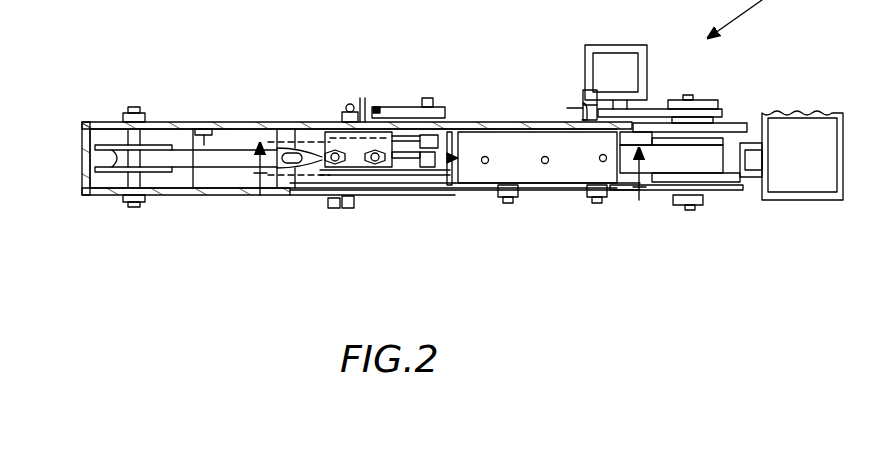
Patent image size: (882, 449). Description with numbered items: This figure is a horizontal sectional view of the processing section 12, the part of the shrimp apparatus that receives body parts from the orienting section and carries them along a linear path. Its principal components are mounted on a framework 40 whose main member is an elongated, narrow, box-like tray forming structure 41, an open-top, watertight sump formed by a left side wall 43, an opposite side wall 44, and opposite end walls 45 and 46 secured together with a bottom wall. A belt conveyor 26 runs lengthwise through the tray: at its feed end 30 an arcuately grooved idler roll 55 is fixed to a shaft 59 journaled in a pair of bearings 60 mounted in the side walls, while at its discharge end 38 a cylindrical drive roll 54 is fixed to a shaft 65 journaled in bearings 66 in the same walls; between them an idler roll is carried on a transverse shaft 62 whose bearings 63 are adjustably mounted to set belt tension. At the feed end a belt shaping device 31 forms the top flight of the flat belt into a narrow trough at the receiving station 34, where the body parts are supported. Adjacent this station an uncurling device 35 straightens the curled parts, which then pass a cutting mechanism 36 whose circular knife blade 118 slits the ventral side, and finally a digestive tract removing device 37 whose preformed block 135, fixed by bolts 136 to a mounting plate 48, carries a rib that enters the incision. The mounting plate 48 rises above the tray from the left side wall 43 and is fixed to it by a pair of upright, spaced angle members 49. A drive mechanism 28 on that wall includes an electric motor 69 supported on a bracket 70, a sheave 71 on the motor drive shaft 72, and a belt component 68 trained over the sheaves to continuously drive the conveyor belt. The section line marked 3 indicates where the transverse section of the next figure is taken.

The processing section 12 is at (469, 73).
The left side wall 43 is at (280, 122).
The tray forming structure 41 is at (190, 195).
The end wall 45 is at (83, 157).
The grooved idler roll 55 is at (83, 185).
The shaft 59 is at (128, 120).
The bearings 60 is at (128, 207).
The feed end 30 is at (118, 150).
The belt shaping device 31 is at (190, 132).
The belt conveyor 26 is at (224, 136).
The receiving station 34 is at (204, 172).
The section line 3 is at (447, 173).
The framework 40 is at (263, 196).
The right side wall 44 is at (300, 196).
The uncurling device 35 is at (362, 172).
The transverse shaft 62 is at (345, 117).
The bearings 63 is at (330, 122).
The angle members 49 is at (360, 105).
The cutting mechanism 36 is at (410, 170).
The preformed block 135 is at (477, 178).
The knife blade 118 is at (460, 152).
The digestive tract removing device 37 is at (543, 184).
The bolts 136 is at (500, 203).
The mounting plate 48 is at (533, 123).
The bracket 70 is at (585, 52).
The electric motor 69 is at (617, 53).
The sheave 71 is at (622, 74).
The drive mechanism 28 is at (630, 70).
The motor drive shaft 72 is at (592, 93).
The belt component 68 is at (668, 105).
The bearings 66 is at (690, 105).
The shaft 65 is at (695, 98).
The discharge end 38 is at (712, 137).
The drive roll 54 is at (710, 190).
The end wall 46 is at (745, 193).